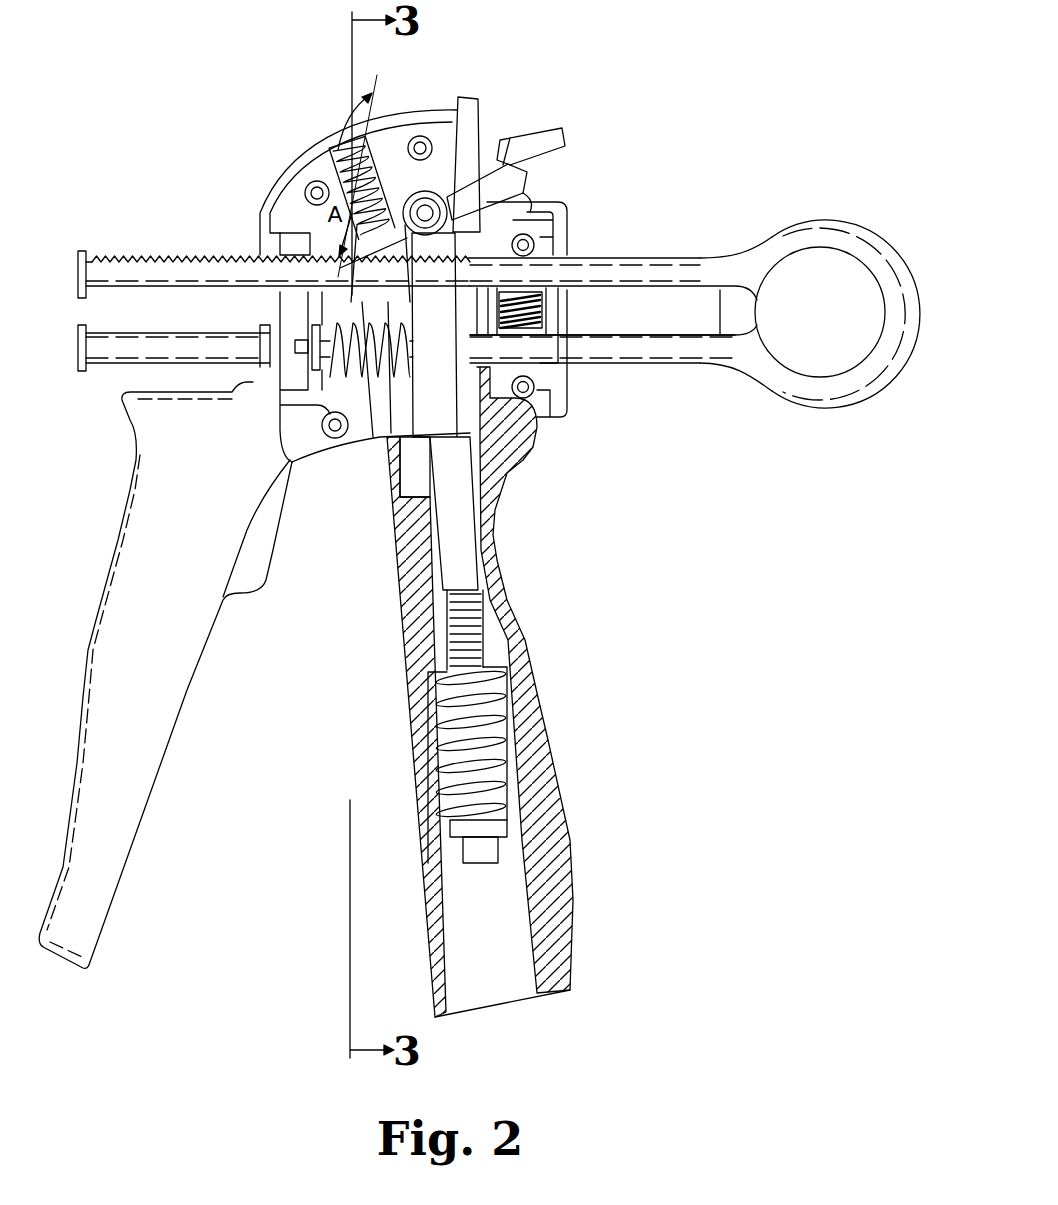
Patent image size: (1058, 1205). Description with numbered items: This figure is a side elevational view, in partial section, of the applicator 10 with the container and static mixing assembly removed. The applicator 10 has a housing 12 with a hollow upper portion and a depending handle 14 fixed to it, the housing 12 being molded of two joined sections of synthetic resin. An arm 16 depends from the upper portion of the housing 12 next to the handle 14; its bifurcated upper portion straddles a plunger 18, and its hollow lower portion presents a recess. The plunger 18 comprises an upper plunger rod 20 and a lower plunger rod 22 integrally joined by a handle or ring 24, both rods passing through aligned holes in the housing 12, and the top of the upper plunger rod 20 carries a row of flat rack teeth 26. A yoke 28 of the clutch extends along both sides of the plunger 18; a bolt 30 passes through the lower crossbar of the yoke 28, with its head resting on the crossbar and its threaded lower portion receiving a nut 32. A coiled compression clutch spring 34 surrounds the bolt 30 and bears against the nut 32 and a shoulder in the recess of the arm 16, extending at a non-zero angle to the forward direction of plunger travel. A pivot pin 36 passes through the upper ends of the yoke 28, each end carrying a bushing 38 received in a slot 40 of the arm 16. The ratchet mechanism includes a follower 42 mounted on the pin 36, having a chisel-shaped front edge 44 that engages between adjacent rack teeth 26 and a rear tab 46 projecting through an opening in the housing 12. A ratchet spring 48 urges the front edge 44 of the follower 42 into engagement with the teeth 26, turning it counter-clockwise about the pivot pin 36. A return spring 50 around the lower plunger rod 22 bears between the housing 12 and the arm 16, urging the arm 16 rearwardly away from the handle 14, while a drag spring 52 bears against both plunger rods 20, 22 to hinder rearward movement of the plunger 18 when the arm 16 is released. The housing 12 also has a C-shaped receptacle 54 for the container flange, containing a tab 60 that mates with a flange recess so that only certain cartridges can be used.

The applicator 10 is at (638, 86).
The housing 12 is at (311, 166).
The handle 14 is at (120, 610).
The arm 16 is at (556, 957).
The plunger 18 is at (815, 213).
The upper plunger rod 20 is at (687, 262).
The lower plunger rod 22 is at (676, 350).
The ring 24 is at (828, 392).
The rack teeth 26 is at (152, 254).
The yoke 28 is at (447, 410).
The bolt 30 is at (463, 580).
The nut 32 is at (500, 823).
The clutch spring 34 is at (520, 738).
The pivot pin 36 is at (461, 150).
The bushing 38 is at (535, 190).
The slot 40 is at (427, 205).
The follower 42 is at (530, 176).
The front edge 44 is at (350, 277).
The tab 46 is at (566, 132).
The ratchet spring 48 is at (376, 170).
The return spring 50 is at (375, 437).
The drag spring 52 is at (542, 315).
The receptacle 54 is at (278, 255).
The tab 60 is at (298, 343).